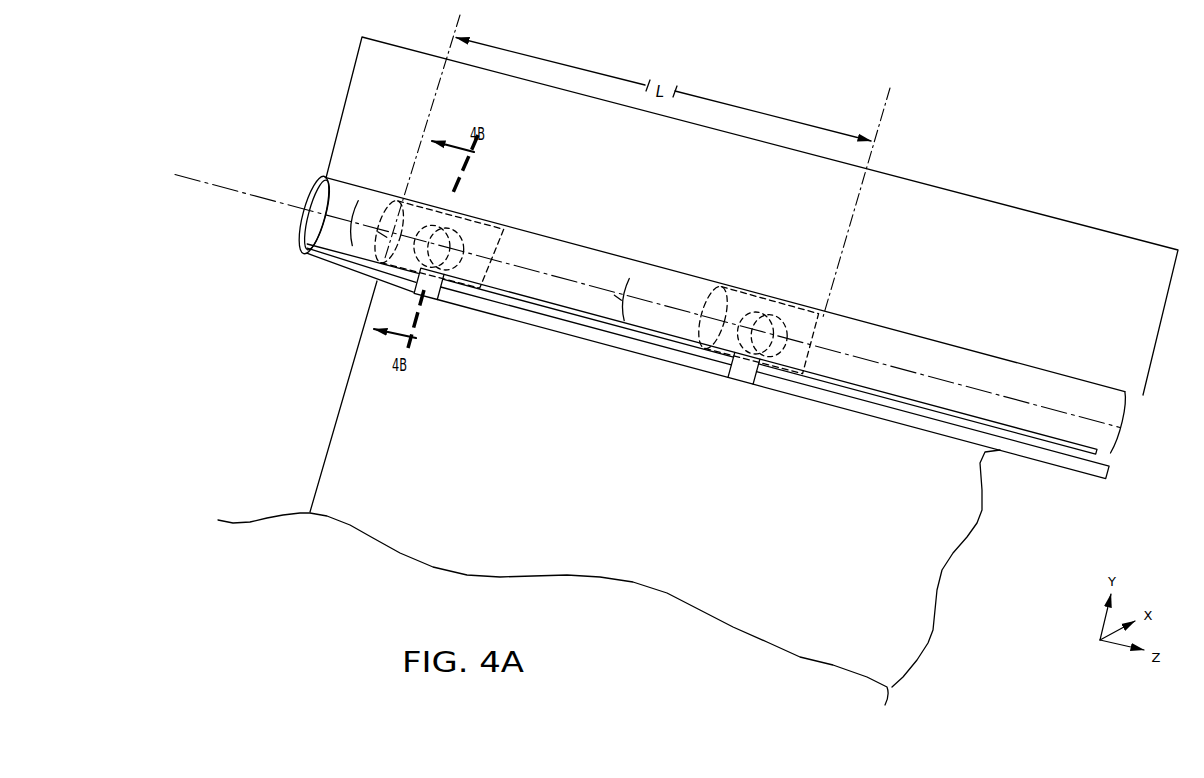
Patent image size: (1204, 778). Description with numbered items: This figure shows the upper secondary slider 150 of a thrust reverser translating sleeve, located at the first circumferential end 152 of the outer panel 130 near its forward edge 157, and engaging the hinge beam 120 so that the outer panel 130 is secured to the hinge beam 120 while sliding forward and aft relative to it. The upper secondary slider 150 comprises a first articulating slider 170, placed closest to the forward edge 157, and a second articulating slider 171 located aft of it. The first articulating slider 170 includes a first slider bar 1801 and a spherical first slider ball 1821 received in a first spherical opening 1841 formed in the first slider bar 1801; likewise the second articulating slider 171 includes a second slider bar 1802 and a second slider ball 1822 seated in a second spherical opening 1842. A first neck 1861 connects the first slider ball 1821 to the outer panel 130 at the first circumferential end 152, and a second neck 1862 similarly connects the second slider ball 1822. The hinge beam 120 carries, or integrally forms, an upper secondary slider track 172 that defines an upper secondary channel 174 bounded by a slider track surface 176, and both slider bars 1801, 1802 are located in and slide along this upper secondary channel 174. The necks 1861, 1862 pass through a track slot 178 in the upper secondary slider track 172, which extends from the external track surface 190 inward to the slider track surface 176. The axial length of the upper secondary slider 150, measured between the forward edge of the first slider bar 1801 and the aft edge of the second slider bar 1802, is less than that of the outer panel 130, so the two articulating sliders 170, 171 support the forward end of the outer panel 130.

The hinge beam 120 is at (752, 216).
The outer panel 130 is at (609, 577).
The upper secondary slider 150 is at (650, 297).
The first circumferential end 152 is at (383, 282).
The forward edge 157 is at (351, 378).
The first articulating slider 170 is at (473, 246).
The second articulating slider 171 is at (736, 298).
The upper secondary slider track 172 is at (603, 258).
The upper secondary channel 174 is at (312, 195).
The slider track surface 176 is at (313, 237).
The track slot 178 is at (945, 411).
The external track surface 190 is at (1097, 405).
The first slider bar 1801 is at (478, 253).
The second slider bar 1802 is at (735, 295).
The first slider ball 1821 is at (450, 234).
The second slider ball 1822 is at (767, 327).
The first spherical opening 1841 is at (461, 265).
The second spherical opening 1842 is at (731, 343).
The first neck 1861 is at (445, 299).
The second neck 1862 is at (746, 377).